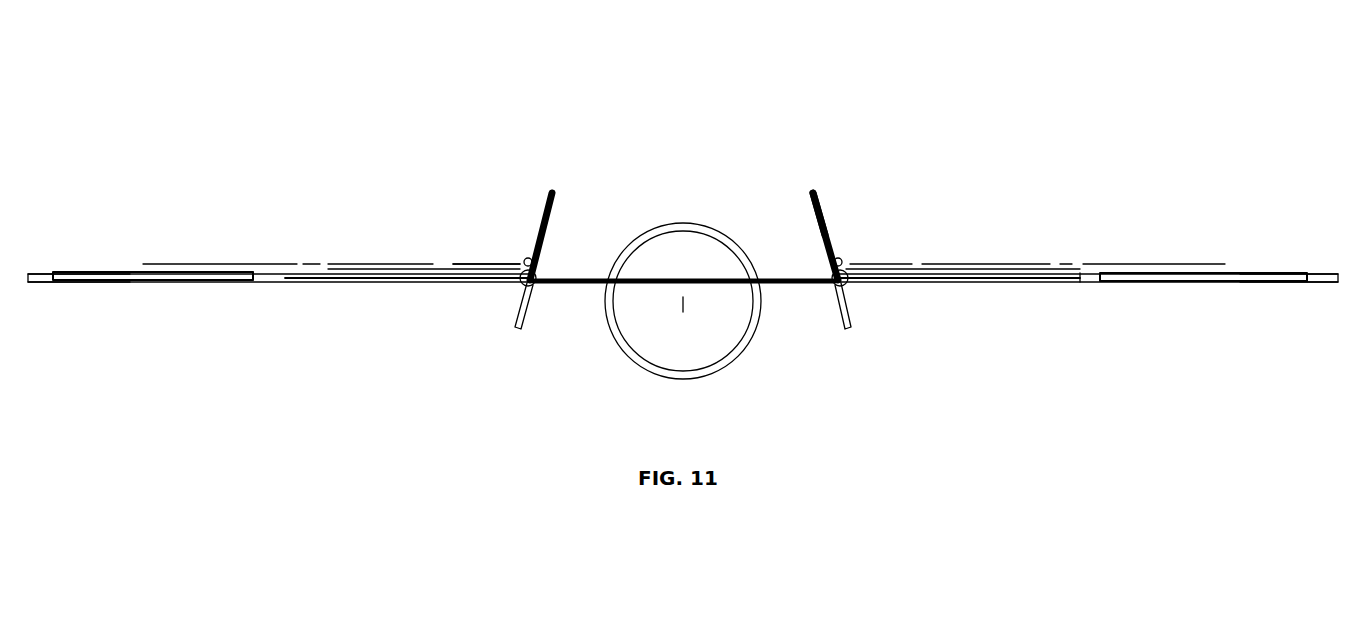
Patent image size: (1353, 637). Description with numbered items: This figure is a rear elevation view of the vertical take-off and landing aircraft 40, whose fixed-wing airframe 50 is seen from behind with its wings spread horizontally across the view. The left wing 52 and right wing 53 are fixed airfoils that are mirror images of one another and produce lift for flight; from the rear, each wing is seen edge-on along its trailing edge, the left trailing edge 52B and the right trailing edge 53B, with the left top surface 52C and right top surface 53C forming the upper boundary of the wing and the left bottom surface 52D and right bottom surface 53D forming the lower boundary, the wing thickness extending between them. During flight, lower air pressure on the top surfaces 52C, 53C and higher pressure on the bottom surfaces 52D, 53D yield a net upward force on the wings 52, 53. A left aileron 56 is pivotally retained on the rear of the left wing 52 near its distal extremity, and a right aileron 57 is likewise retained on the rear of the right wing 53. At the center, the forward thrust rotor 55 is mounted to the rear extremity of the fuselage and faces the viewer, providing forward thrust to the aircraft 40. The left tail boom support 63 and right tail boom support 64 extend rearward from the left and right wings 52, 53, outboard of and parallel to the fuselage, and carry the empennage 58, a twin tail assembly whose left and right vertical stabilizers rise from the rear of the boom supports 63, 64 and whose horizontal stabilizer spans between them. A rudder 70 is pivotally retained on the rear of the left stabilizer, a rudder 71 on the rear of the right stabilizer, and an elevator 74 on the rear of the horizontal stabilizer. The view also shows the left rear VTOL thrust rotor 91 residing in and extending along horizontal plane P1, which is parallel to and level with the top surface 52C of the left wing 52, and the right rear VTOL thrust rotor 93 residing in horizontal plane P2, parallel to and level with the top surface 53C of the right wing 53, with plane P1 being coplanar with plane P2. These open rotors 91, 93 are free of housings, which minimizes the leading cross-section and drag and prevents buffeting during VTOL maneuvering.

The VTOL aircraft 40 is at (922, 100).
The airframe 50 is at (86, 268).
The left wing 52 is at (277, 264).
The left trailing edge 52B is at (287, 282).
The left top surface 52C is at (340, 264).
The left bottom surface 52D is at (315, 283).
The right wing 53 is at (1097, 270).
The right trailing edge 53B is at (1078, 282).
The right top surface 53C is at (980, 267).
The right bottom surface 53D is at (992, 285).
The forward thrust rotor 55 is at (705, 238).
The left aileron 56 is at (140, 282).
The right aileron 57 is at (1207, 283).
The empennage 58 is at (817, 193).
The left tail boom support 63 is at (517, 285).
The right tail boom support 64 is at (850, 285).
The rudder 70 is at (548, 222).
The rudder 71 is at (828, 230).
The elevator 74 is at (580, 283).
The left rear VTOL thrust rotor 91 is at (475, 263).
The right rear VTOL thrust rotor 93 is at (897, 263).
The horizontal plane P1 is at (368, 264).
The horizontal plane P2 is at (1023, 265).